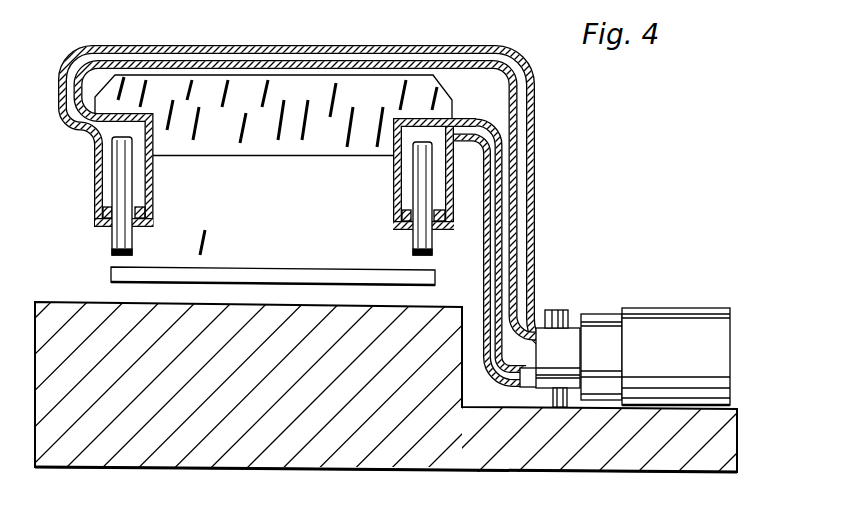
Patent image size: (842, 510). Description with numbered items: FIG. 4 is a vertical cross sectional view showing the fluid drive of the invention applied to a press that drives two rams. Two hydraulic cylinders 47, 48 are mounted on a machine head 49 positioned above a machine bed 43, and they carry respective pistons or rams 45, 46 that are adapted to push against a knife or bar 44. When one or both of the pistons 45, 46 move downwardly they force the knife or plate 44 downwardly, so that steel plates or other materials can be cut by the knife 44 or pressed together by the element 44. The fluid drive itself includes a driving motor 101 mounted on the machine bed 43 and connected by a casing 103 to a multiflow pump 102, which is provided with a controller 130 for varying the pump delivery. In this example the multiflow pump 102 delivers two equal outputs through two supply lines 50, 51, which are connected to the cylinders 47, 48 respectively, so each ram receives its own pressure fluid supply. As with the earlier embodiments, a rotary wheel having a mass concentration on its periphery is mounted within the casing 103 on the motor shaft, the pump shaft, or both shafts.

The machine bed 43 is at (192, 391).
The knife or bar 44 is at (248, 268).
The piston or ram 45 is at (122, 243).
The piston or ram 46 is at (420, 245).
The hydraulic cylinder 47 is at (155, 184).
The hydraulic cylinder 48 is at (394, 202).
The machine head 49 is at (259, 141).
The supply line 50 is at (535, 200).
The supply line 51 is at (482, 265).
The driving motor 101 is at (677, 323).
The multiflow pump 102 is at (558, 367).
The casing 103 is at (602, 330).
The controller 130 is at (555, 322).